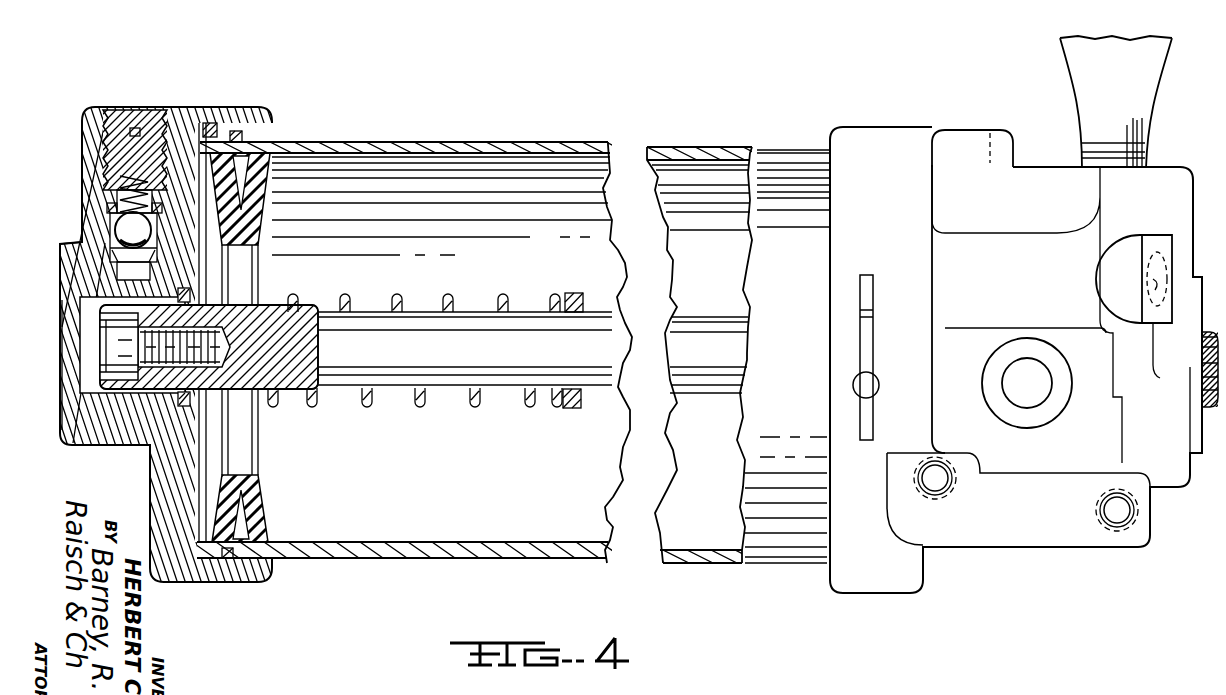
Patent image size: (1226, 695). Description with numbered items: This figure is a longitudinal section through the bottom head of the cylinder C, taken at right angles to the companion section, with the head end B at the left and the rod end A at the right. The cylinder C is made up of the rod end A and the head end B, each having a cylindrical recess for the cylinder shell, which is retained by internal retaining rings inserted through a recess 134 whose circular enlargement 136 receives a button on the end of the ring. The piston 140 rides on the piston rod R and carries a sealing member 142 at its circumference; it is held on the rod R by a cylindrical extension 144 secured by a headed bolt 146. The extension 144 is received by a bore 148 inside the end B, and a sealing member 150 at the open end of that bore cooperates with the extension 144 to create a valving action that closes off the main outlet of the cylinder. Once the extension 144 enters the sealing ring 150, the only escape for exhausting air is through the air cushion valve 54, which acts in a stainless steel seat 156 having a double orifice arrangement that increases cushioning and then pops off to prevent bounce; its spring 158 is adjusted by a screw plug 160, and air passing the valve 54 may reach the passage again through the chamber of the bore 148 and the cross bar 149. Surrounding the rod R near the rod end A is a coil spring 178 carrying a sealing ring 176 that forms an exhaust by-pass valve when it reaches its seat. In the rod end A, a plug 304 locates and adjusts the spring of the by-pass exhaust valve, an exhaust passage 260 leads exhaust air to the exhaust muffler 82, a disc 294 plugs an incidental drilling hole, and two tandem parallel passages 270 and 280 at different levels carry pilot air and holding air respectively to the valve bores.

The head end B is at (203, 120).
The rod end A is at (1172, 178).
The cylinder C is at (722, 563).
The piston rod R is at (408, 326).
The screw plug 160 is at (151, 143).
The spring 158 is at (120, 186).
The air cushion valve 54 is at (122, 228).
The cross bar 149 is at (93, 258).
The seat 156 is at (143, 262).
The sealing member 142 is at (262, 160).
The sealing member 150 is at (192, 398).
The piston 140 is at (235, 450).
The headed bolt 146 is at (108, 356).
The cylindrical extension 144 is at (160, 366).
The bore 148 is at (153, 382).
The coil spring 178 is at (475, 408).
The sealing ring 176 is at (573, 409).
The recess 134 is at (868, 354).
The circular enlargement 136 is at (877, 393).
The plug 304 is at (987, 152).
The exhaust muffler 82 is at (1138, 104).
The exhaust passage 260 is at (1150, 280).
The disc 294 is at (1027, 396).
The lower tandem passage 280 is at (936, 488).
The upper tandem passage 270 is at (1117, 526).